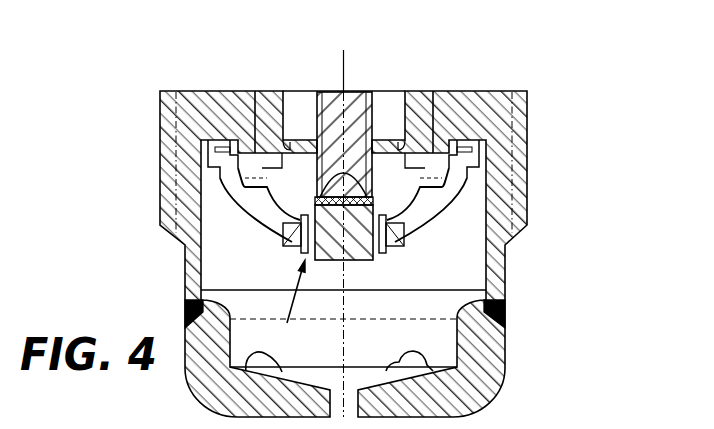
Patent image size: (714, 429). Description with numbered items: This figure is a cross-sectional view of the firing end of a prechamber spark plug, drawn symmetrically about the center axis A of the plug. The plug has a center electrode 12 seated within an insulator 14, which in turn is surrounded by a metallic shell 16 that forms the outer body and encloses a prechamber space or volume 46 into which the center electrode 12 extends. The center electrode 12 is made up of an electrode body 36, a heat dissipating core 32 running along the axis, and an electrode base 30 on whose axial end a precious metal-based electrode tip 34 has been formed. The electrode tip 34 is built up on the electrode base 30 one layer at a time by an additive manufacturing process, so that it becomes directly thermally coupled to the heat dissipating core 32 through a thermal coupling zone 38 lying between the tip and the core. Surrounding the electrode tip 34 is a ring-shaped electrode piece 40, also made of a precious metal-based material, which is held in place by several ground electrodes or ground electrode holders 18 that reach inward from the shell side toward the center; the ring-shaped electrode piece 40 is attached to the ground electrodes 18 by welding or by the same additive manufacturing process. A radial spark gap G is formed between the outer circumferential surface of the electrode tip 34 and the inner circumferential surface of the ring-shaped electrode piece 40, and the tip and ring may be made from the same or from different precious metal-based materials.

The center electrode 12 is at (371, 107).
The insulator 14 is at (390, 107).
The metallic shell 16 is at (498, 120).
The ground electrode 18 is at (238, 192).
The electrode base 30 is at (366, 196).
The heat dissipating core 32 is at (338, 133).
The precious metal-based electrode tip 34 is at (357, 238).
The electrode body 36 is at (327, 140).
The thermal coupling zone 38 is at (374, 204).
The ring-shaped electrode piece 40 is at (281, 238).
The prechamber space or volume 46 is at (465, 223).
The center axis A is at (343, 57).
The radial spark gap G is at (289, 308).